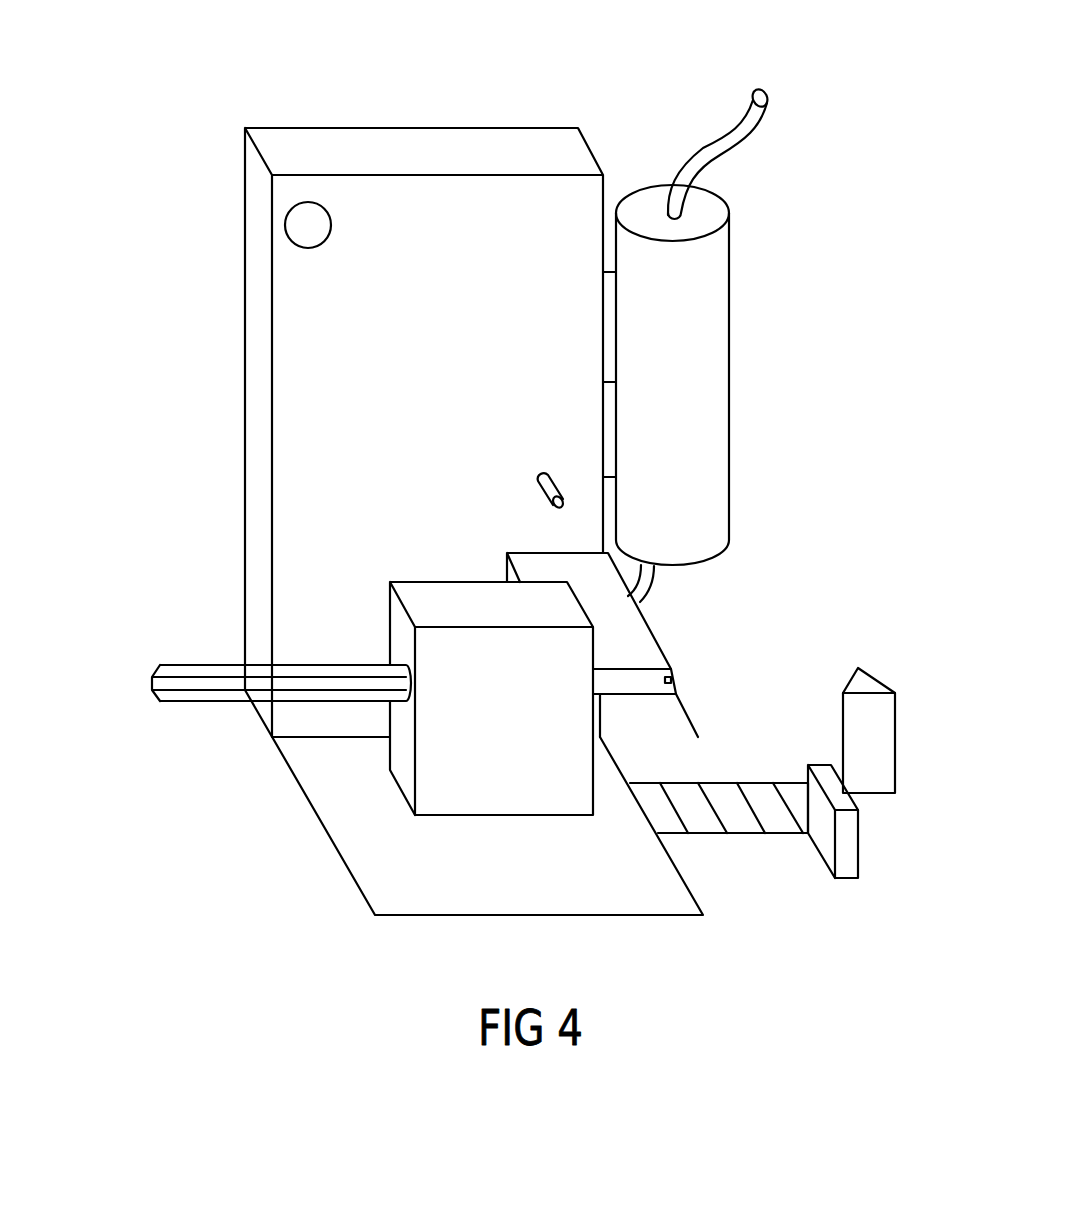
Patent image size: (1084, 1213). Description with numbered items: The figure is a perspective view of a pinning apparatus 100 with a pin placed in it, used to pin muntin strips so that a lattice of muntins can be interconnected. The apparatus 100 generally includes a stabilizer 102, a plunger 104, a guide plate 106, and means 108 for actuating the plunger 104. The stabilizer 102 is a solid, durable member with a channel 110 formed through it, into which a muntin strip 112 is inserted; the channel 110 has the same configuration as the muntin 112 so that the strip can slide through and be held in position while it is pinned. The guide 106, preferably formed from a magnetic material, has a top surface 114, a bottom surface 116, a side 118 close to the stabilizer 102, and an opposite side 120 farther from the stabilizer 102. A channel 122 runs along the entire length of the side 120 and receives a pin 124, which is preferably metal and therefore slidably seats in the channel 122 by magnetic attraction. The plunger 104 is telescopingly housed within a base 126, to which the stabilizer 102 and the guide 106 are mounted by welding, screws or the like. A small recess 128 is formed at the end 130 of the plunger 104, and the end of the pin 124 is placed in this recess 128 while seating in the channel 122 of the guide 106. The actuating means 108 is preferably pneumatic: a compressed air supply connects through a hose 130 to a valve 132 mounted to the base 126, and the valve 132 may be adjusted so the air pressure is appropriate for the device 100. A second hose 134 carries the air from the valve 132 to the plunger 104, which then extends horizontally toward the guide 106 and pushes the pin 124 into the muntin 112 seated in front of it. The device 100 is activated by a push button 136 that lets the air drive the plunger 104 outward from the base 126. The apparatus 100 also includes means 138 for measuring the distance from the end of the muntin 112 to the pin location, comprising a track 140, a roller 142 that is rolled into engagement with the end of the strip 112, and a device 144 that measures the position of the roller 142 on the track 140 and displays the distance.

The pinning apparatus 100 is at (460, 95).
The stabilizer 102 is at (435, 747).
The plunger 104 is at (565, 472).
The guide plate 106 is at (641, 653).
The means for actuating the plunger 108 is at (708, 374).
The channel 110 is at (405, 666).
The muntin strip 112 is at (166, 698).
The top surface 114 is at (533, 555).
The bottom surface 116 is at (650, 696).
The side 118 is at (512, 573).
The side 120 is at (672, 678).
The channel 122 is at (671, 681).
The pin 124 is at (686, 707).
The base 126 is at (288, 320).
The recess 128 is at (566, 494).
The hose 130 is at (762, 110).
The valve 132 is at (702, 308).
The second conduit or hose 134 is at (648, 592).
The push button 136 is at (292, 224).
The means for measuring 138 is at (771, 856).
The track 140 is at (723, 797).
The roller 142 is at (830, 858).
The device for measuring 144 is at (856, 678).